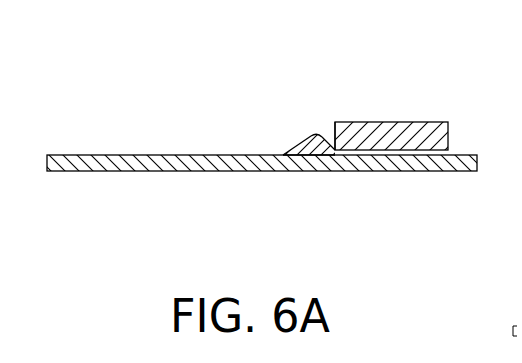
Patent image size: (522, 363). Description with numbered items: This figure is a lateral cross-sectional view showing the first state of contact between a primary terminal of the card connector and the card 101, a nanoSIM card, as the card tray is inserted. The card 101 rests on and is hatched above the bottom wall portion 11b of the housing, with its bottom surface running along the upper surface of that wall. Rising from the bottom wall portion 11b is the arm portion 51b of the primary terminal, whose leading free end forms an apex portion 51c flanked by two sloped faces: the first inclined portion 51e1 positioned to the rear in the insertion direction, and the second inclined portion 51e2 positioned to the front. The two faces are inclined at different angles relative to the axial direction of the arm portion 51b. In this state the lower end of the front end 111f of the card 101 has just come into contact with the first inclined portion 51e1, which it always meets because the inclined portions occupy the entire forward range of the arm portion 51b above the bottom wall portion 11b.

The card 101 is at (405, 122).
The front end 111f is at (334, 122).
The bottom wall portion 11b is at (183, 171).
The arm portion 51b is at (300, 157).
The apex portion 51c is at (316, 133).
The first inclined portion 51e1 is at (326, 136).
The second inclined portion 51e2 is at (297, 140).